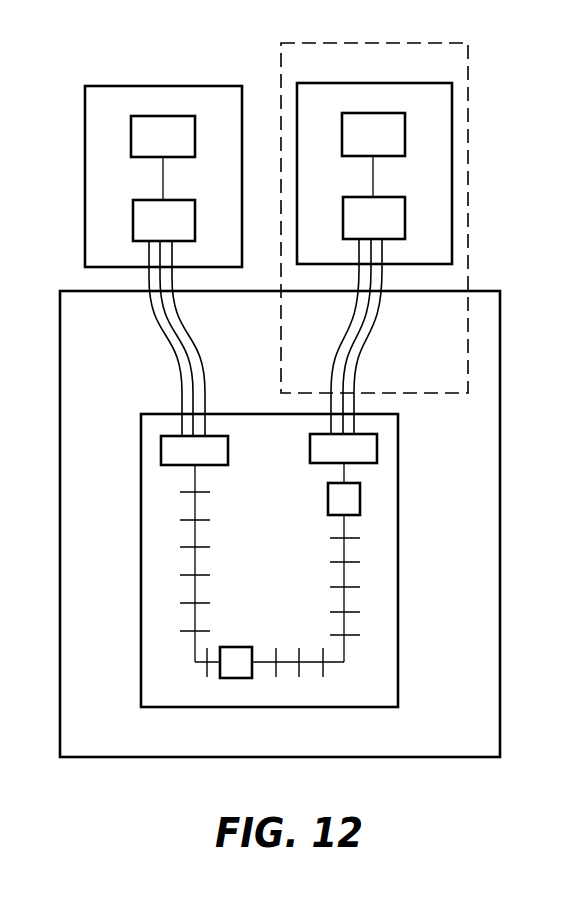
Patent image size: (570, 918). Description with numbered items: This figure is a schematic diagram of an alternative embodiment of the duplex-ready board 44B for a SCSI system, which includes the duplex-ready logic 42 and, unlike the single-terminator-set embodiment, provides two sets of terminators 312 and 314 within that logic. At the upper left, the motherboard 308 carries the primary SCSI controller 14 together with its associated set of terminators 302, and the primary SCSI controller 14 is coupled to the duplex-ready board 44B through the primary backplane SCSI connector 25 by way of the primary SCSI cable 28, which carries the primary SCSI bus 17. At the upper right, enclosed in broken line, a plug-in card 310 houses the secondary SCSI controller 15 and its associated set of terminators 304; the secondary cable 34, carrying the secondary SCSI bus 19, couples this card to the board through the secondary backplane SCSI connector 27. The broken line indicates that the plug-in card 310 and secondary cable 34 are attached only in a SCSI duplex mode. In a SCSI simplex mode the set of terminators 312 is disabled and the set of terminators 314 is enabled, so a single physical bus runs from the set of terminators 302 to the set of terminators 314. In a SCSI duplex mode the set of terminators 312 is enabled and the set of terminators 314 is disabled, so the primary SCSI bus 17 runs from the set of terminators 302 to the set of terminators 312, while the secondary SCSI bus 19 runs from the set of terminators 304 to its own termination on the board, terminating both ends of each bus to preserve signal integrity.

The duplex-ready board 44B is at (489, 291).
The motherboard 308 is at (188, 85).
The set of terminators 302 is at (175, 116).
The primary SCSI controller 14 is at (176, 200).
The plug-in card 310 is at (388, 83).
The set of terminators 304 is at (385, 113).
The secondary SCSI controller 15 is at (386, 197).
The primary SCSI cable 28 is at (163, 335).
The primary SCSI bus 17 is at (193, 369).
The secondary cable 34 is at (370, 332).
The secondary SCSI bus 19 is at (348, 367).
The duplex-ready logic 42 is at (157, 414).
The primary backplane SCSI connector 25 is at (230, 449).
The secondary backplane SCSI connector 27 is at (317, 465).
The set of terminators 314 is at (362, 498).
The set of terminators 312 is at (242, 647).